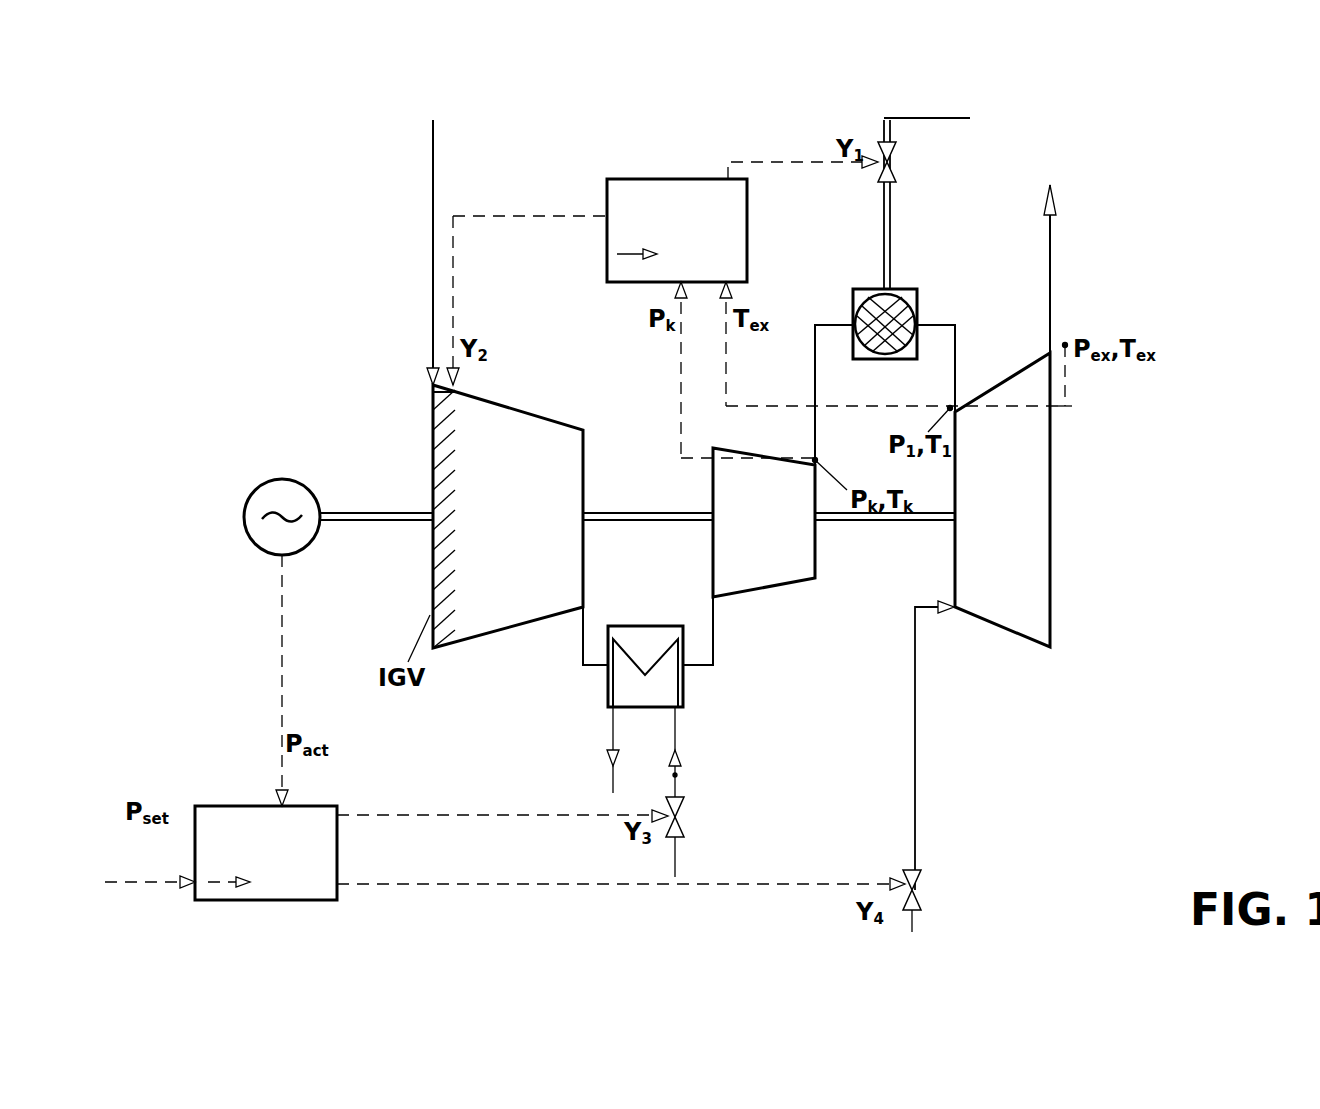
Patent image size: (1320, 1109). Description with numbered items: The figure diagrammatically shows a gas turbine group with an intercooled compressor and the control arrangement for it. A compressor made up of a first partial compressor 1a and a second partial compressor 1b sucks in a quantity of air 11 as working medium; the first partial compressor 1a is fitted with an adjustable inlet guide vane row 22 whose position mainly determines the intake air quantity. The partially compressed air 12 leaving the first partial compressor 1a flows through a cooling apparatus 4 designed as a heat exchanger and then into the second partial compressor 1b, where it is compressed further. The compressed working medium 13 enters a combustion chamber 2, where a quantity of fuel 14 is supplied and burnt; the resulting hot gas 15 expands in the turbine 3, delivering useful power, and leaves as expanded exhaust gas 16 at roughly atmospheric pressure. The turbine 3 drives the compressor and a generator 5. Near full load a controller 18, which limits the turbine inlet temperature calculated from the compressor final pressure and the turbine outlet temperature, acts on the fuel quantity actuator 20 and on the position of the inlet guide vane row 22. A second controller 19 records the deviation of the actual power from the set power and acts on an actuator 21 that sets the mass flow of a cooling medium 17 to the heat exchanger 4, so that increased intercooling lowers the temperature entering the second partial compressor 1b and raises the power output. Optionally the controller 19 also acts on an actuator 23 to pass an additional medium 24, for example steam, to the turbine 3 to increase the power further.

The first partial compressor 1a is at (508, 516).
The second partial compressor 1b is at (764, 522).
The combustion chamber 2 is at (917, 289).
The turbine 3 is at (1002, 500).
The cooling apparatus 4 is at (683, 688).
The generator 5 is at (269, 481).
The quantity of air 11 is at (433, 155).
The partially compressed air 12 is at (583, 643).
The compressed working medium 13 is at (815, 325).
The quantity of fuel 14 is at (949, 196).
The hot gas 15 is at (955, 325).
The expanded exhaust gas 16 is at (1050, 260).
The cooling medium 17 is at (675, 775).
The controller 18 is at (634, 180).
The second controller 19 is at (337, 896).
The fuel quantity actuator 20 is at (892, 164).
The actuator 21 is at (680, 818).
The adjustable inlet guide vane row 22 is at (442, 418).
The actuator 23 is at (917, 890).
The additional medium 24 is at (915, 685).